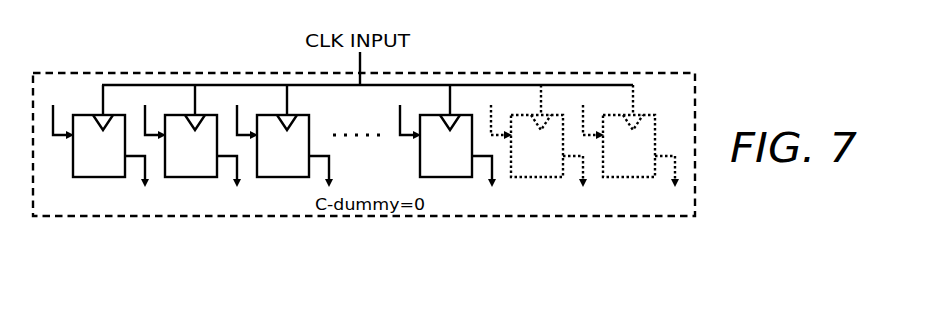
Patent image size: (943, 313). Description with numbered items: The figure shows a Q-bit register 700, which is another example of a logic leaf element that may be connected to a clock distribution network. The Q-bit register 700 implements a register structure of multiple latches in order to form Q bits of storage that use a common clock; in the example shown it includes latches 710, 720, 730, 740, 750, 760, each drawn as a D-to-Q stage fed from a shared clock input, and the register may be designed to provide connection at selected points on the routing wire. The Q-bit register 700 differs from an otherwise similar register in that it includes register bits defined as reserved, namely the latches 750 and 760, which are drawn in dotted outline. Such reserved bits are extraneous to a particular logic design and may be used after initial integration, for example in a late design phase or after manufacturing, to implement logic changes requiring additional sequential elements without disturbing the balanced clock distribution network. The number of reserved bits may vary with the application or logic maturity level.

The Q-bit register 700 is at (181, 55).
The latch 710 is at (97, 177).
The latch 720 is at (193, 183).
The latch 730 is at (285, 183).
The latch 740 is at (448, 183).
The latch 750 is at (539, 183).
The latch 760 is at (631, 183).